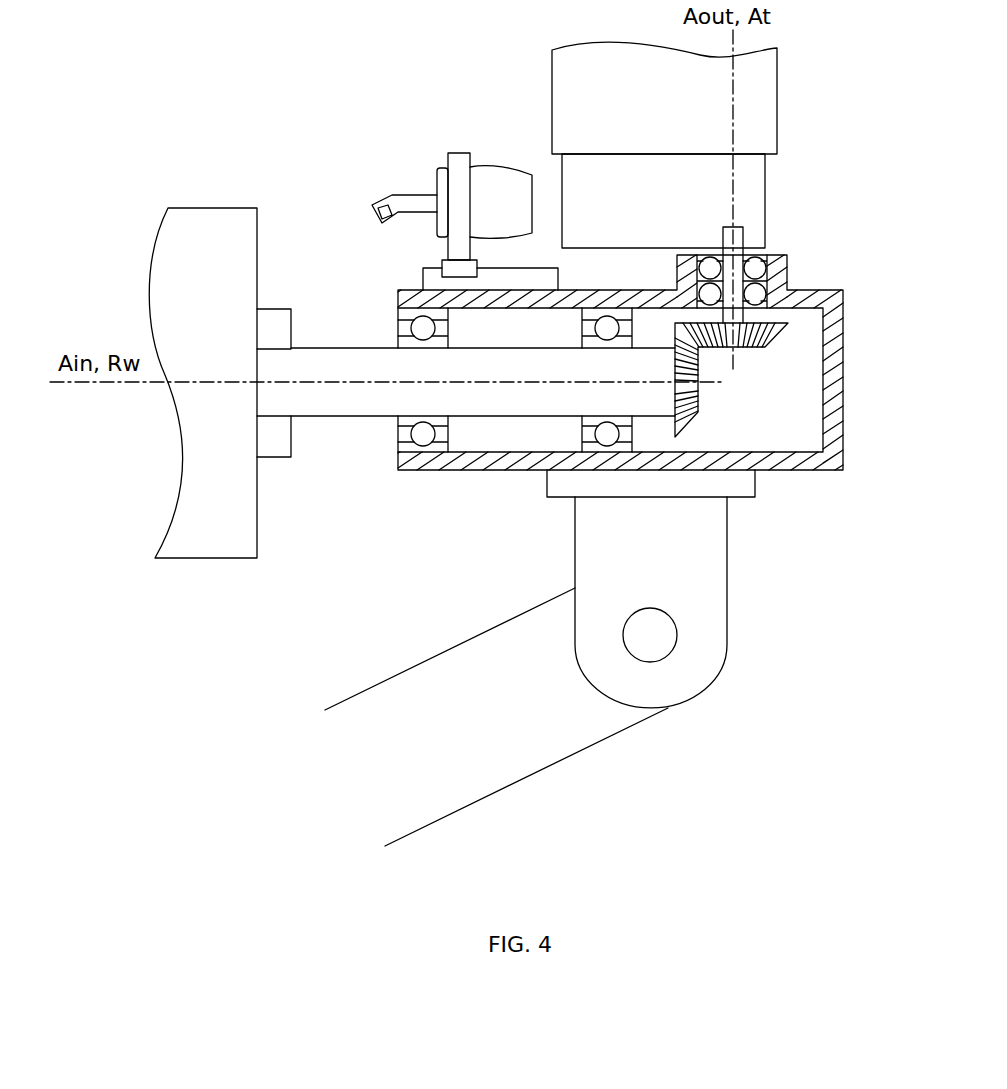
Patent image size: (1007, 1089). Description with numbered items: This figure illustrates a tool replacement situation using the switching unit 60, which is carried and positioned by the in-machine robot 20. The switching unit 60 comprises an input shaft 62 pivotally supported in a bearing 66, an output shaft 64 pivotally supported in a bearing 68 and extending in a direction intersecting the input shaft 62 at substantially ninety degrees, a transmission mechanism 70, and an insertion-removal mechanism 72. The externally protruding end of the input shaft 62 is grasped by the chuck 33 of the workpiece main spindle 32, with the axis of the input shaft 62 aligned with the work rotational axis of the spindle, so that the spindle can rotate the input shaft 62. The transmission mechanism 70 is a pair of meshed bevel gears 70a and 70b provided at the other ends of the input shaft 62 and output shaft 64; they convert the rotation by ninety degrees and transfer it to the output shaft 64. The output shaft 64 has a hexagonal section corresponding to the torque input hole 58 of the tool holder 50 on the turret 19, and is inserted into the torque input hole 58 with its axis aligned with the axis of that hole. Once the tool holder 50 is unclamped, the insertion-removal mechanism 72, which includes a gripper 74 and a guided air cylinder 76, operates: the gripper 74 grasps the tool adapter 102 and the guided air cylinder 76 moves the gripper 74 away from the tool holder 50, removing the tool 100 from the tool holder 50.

The turret 19 is at (763, 95).
The in-machine robot 20 is at (525, 740).
The workpiece main spindle 32 is at (218, 214).
The chuck 33 is at (278, 317).
The tool holder 50 is at (758, 180).
The torque input hole 58 is at (735, 228).
The switching unit 60 is at (843, 491).
The input shaft 62 is at (333, 407).
The output shaft 64 is at (792, 314).
The bearing 66 is at (440, 443).
The bearing 68 is at (772, 290).
The transmission mechanism 70 is at (794, 431).
The bevel gear 70a is at (690, 400).
The bevel gear 70b is at (780, 337).
The insertion-removal mechanism 72 is at (431, 164).
The gripper 74 is at (460, 155).
The guided air cylinder 76 is at (428, 272).
The tool 100 is at (392, 195).
The tool adapter 102 is at (502, 177).